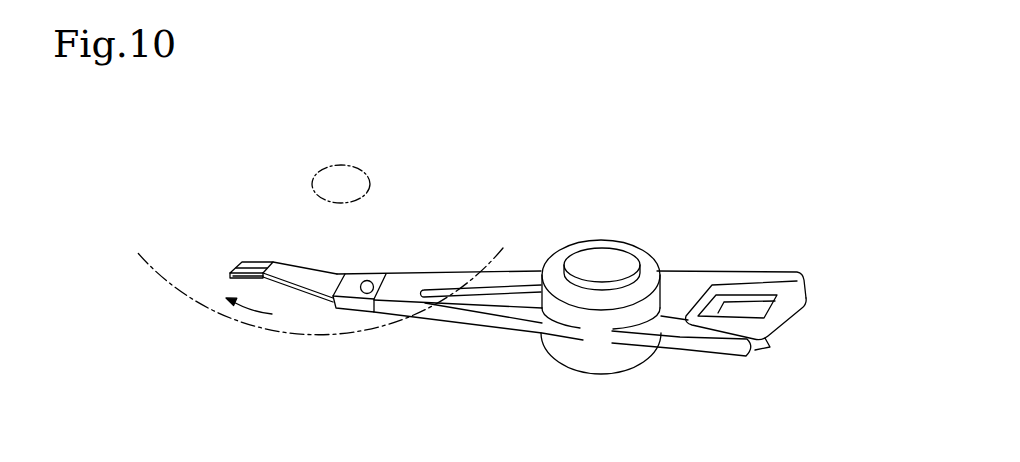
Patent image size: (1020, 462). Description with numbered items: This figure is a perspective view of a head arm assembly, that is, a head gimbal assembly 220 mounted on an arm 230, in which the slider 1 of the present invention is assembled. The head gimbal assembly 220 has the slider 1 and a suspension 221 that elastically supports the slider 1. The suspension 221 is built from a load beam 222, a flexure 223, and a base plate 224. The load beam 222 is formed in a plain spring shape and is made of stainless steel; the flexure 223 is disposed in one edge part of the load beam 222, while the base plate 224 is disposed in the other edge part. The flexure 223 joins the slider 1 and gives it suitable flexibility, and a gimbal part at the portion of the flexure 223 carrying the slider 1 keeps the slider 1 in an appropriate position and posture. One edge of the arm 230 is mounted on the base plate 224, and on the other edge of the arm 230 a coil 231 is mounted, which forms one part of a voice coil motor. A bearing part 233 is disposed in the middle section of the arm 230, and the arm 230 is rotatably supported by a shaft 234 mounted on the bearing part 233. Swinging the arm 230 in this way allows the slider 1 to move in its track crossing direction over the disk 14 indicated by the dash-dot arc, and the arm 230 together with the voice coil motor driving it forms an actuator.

The slider 1 is at (258, 264).
The magnetic disk 14 is at (262, 333).
The head gimbal assembly 220 is at (326, 313).
The suspension 221 is at (324, 246).
The load beam 222 is at (340, 277).
The flexure 223 is at (235, 269).
The base plate 224 is at (388, 274).
The arm 230 is at (448, 316).
The coil 231 is at (795, 325).
The bearing part 233 is at (548, 258).
The shaft 234 is at (612, 258).